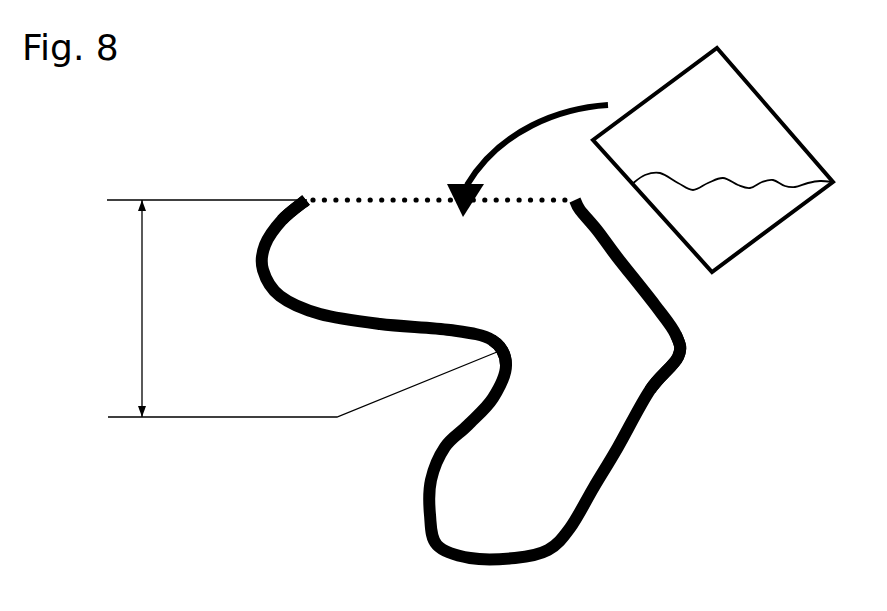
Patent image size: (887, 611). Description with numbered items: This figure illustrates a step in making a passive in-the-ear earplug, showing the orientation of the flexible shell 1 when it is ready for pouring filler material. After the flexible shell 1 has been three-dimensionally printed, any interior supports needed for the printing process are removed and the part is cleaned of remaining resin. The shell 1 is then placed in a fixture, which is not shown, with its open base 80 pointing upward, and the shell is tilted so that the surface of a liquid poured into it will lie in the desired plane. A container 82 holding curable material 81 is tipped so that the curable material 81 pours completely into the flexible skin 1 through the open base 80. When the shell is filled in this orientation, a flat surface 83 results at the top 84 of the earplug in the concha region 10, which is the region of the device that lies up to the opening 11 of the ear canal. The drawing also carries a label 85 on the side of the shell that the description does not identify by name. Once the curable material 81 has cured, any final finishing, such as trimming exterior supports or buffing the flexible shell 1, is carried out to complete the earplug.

The flexible shell 1 is at (262, 278).
The concha region 10 is at (140, 313).
The opening of the ear canal 11 is at (497, 352).
The open base 80 is at (408, 191).
The curable material 81 is at (713, 218).
The container 82 is at (767, 105).
The flat surface 83 is at (358, 200).
The top of the earplug 84 is at (300, 198).
The side wall of bag 85 is at (685, 365).